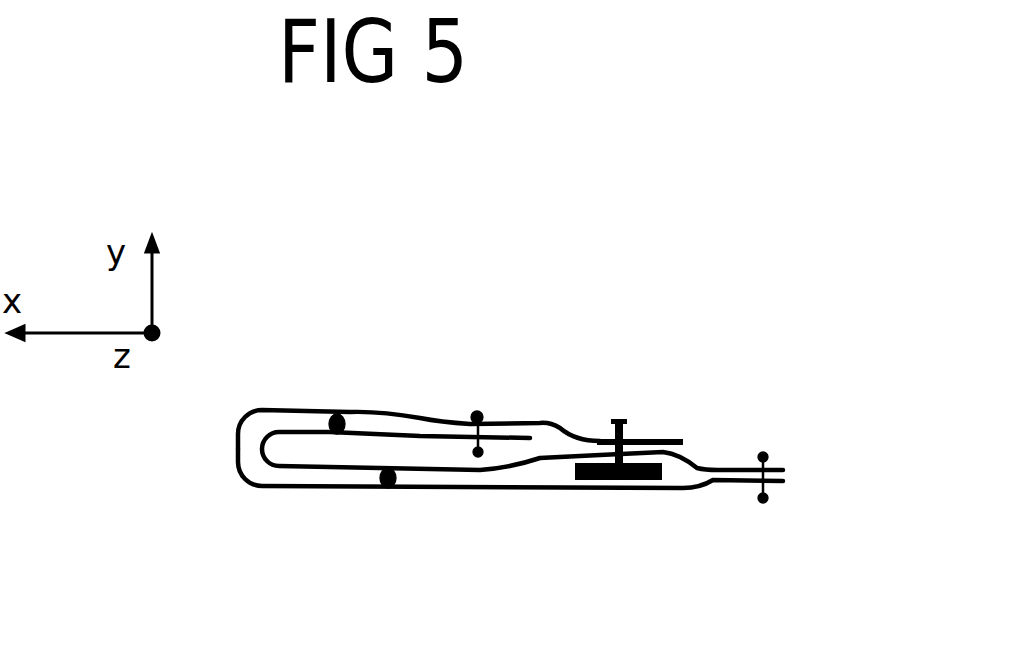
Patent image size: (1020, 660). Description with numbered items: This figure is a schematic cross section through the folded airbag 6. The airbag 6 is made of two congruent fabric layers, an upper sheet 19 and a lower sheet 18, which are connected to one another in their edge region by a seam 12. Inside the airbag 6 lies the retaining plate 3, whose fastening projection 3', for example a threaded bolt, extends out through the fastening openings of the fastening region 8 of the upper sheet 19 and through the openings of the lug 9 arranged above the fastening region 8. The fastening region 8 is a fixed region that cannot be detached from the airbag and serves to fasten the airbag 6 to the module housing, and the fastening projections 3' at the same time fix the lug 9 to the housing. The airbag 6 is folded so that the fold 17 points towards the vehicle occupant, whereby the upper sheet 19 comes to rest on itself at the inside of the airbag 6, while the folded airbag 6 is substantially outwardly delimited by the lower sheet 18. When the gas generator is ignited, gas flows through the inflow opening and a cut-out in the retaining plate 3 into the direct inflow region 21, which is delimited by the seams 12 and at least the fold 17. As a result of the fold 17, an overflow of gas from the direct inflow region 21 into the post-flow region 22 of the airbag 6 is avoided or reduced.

The airbag 6 is at (292, 335).
The fold 17 is at (240, 442).
The lower sheet 18 is at (238, 452).
The upper sheet 19 is at (288, 470).
The post-flow region 22 is at (339, 415).
The direct inflow region 21 is at (388, 487).
The seam 12 is at (483, 425).
The lug 9 is at (643, 441).
The fastening region 8 is at (591, 452).
The fastening projection 3' is at (667, 338).
The retaining plate 3 is at (645, 545).